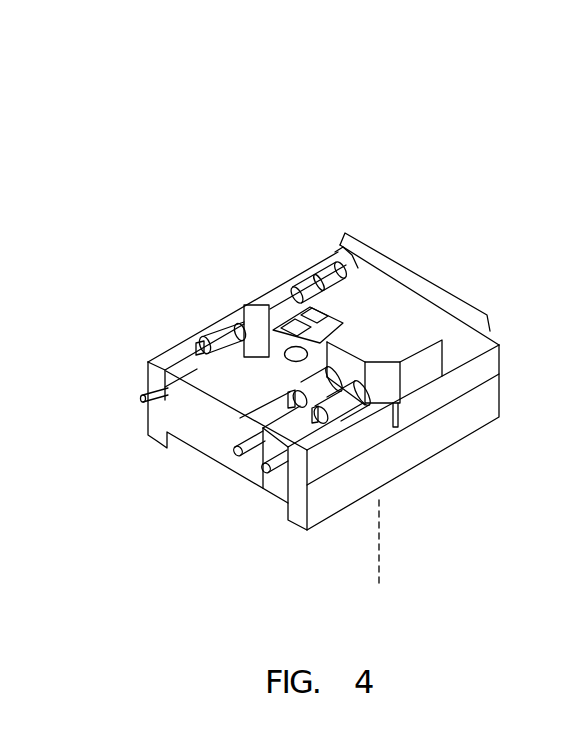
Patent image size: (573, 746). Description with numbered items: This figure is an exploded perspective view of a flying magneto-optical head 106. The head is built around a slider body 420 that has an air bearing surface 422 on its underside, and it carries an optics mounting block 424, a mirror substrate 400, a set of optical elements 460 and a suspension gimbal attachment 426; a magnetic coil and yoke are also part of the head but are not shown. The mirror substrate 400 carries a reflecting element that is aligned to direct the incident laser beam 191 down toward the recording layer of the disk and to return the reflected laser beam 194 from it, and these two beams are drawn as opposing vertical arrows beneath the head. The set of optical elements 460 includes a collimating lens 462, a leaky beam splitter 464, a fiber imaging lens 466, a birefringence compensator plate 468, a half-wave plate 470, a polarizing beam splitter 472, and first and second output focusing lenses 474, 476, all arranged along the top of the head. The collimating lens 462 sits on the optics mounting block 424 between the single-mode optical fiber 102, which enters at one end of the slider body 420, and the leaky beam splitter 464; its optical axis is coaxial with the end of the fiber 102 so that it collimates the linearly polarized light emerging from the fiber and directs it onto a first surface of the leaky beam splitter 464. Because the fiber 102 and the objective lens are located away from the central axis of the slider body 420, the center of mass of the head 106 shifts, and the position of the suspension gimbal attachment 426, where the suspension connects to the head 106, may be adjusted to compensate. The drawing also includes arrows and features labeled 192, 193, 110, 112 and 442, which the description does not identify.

The flying magneto-optical head 106 is at (355, 155).
The set of optical elements 460 is at (172, 220).
The collimating lens 462 is at (221, 338).
The leaky beam splitter 464 is at (257, 330).
The fiber imaging lens 466 is at (322, 276).
The mirror substrate 400 is at (374, 250).
The birefringence compensator plate 468 is at (325, 334).
The half-wave plate 470 is at (443, 310).
The polarizing beam splitter 472 is at (378, 385).
The optics mounting block 424 is at (403, 426).
The single-mode optical fiber 102 is at (147, 383).
The incident laser beam 191 is at (140, 403).
The slider body 420 is at (292, 381).
The suspension gimbal attachment 426 is at (201, 419).
The direction arrow 192 is at (317, 387).
The direction arrow 193 is at (350, 428).
The pin 110 is at (239, 456).
The front face 442 is at (260, 497).
The pin 112 is at (268, 473).
The air bearing surface 422 is at (298, 522).
The first output focusing lens 474 is at (413, 405).
The second output focusing lens 476 is at (350, 398).
The reflected laser beam 194 is at (368, 557).